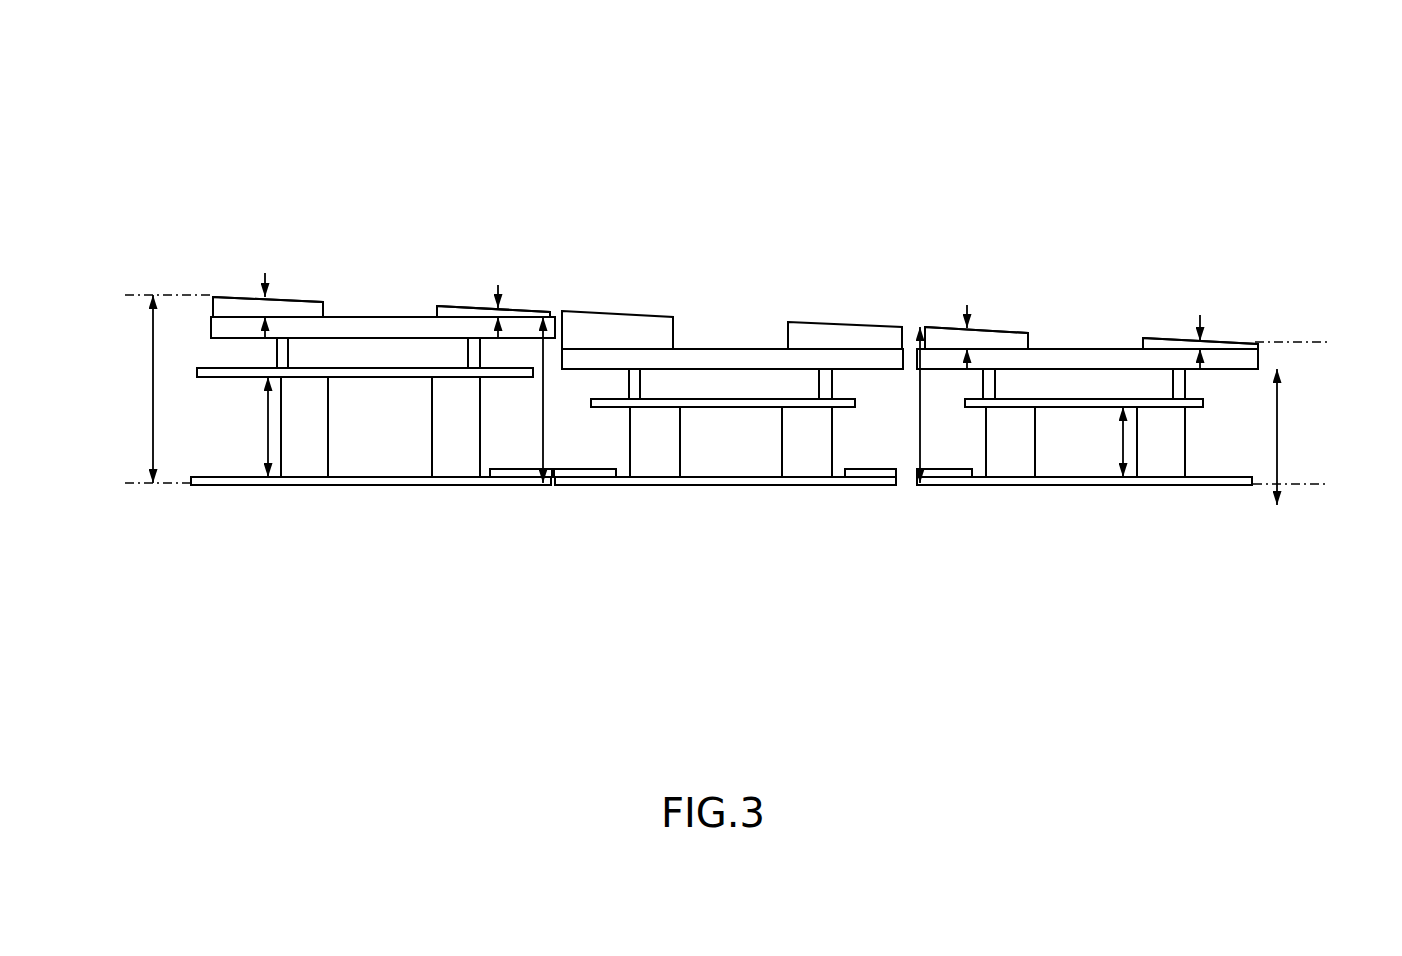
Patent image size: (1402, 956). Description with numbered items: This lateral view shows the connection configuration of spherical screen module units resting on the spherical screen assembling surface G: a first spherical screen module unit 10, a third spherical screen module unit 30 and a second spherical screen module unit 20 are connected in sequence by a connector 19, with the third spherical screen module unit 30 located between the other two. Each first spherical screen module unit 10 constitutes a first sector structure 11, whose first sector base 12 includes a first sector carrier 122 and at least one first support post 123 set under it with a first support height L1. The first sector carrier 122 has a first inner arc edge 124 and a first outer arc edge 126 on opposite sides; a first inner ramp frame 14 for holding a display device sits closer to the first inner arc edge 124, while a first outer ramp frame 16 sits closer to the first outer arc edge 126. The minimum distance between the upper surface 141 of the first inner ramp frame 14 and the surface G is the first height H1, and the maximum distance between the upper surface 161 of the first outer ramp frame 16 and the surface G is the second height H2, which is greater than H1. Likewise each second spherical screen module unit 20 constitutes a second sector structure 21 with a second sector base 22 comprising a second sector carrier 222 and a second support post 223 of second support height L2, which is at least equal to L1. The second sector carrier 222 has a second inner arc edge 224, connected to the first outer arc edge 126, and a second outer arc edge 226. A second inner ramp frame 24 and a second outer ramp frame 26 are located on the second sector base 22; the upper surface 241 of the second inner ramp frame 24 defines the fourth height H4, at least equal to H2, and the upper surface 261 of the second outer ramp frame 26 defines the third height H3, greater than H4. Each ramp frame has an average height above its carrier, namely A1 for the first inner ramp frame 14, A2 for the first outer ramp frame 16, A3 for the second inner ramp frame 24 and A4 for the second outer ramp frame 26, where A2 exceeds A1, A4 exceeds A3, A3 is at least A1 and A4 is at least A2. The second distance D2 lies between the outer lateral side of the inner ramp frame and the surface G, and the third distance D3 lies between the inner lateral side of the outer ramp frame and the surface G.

The first spherical screen module unit 10 is at (1125, 229).
The first sector structure 11 is at (1084, 427).
The first sector base 12 is at (1110, 564).
The first inner ramp frame 14 is at (1145, 342).
The first outer ramp frame 16 is at (1020, 345).
The connector 19 is at (551, 486).
The second spherical screen module unit 20 is at (363, 186).
The second sector structure 21 is at (371, 411).
The second sector base 22 is at (260, 574).
The second inner ramp frame 24 is at (447, 307).
The second outer ramp frame 26 is at (318, 312).
The third spherical screen module unit 30 is at (728, 192).
The first sector carrier 122 is at (1245, 357).
The first support post 123 is at (1157, 447).
The first inner arc edge 124 is at (1262, 358).
The first outer arc edge 126 is at (913, 349).
The upper surface of first inner ramp frame 141 is at (1222, 341).
The upper surface of first outer ramp frame 161 is at (935, 326).
The second sector carrier 222 is at (400, 330).
The second support post 223 is at (305, 457).
The second inner arc edge 224 is at (556, 319).
The second outer arc edge 226 is at (209, 328).
The upper surface of second inner ramp frame 241 is at (523, 306).
The upper surface of second outer ramp frame 261 is at (249, 296).
The first average height A1 is at (1195, 340).
The second average height A2 is at (968, 338).
The third average height A3 is at (492, 313).
The fourth average height A4 is at (263, 307).
The first height H1 is at (1319, 437).
The second height H2 is at (940, 405).
The third height H3 is at (130, 389).
The fourth height H4 is at (564, 400).
The first support height L1 is at (1099, 442).
The second support height L2 is at (247, 427).
The second distance D2 is at (811, 520).
The third distance D3 is at (630, 519).
The spherical screen assembling surface G is at (1280, 508).